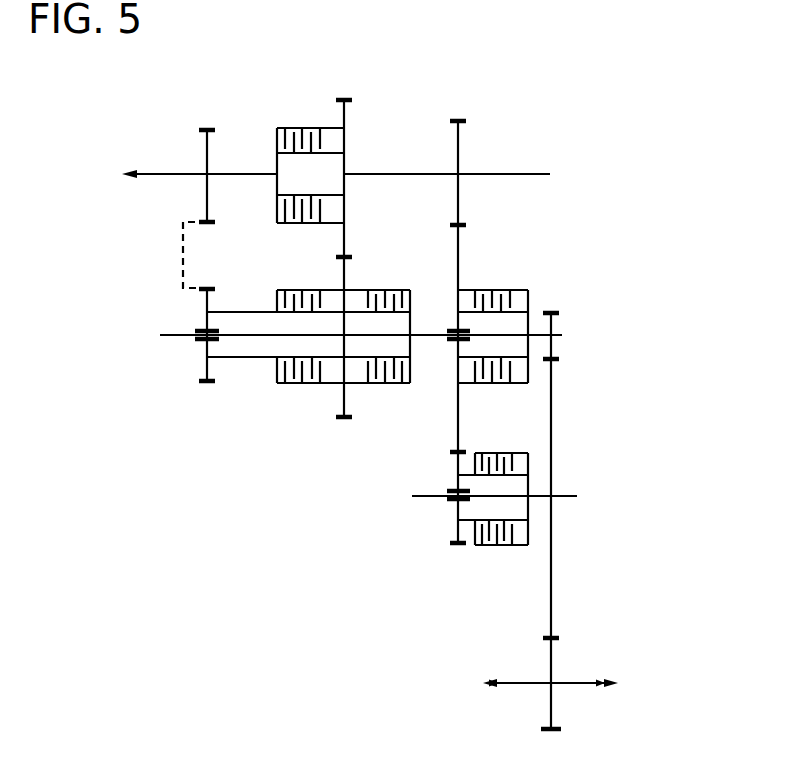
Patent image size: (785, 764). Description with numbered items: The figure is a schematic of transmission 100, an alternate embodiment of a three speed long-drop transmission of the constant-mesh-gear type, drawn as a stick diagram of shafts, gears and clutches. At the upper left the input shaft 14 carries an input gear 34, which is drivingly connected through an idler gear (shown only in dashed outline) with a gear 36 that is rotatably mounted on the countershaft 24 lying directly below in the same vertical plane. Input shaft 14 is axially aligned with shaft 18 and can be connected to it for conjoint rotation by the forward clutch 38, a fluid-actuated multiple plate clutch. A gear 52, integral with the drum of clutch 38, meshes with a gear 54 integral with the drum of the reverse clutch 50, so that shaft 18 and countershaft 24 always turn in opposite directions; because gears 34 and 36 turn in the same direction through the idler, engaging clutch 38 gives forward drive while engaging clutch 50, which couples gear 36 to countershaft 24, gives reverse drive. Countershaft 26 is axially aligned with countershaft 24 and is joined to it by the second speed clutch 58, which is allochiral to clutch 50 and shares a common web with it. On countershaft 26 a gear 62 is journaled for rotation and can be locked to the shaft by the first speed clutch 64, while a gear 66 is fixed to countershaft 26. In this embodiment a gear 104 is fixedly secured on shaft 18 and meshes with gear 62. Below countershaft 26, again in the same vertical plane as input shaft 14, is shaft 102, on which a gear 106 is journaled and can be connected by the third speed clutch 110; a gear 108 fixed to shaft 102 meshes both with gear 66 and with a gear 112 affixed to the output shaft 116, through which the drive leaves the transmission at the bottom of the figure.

The input shaft 14 is at (232, 177).
The shaft 18 is at (402, 172).
The countershaft 24 is at (242, 338).
The countershaft 26 is at (432, 339).
The input gear 34 is at (206, 132).
The gear 36 is at (206, 305).
The clutch 38 is at (297, 126).
The clutch 50 is at (303, 286).
The gear 52 is at (346, 110).
The gear 54 is at (347, 262).
The clutch 58 is at (381, 286).
The gear 62 is at (461, 249).
The clutch 64 is at (501, 288).
The gear 66 is at (555, 325).
The transmission 100 is at (290, 478).
The shaft 102 is at (562, 498).
The gear 104 is at (461, 138).
The gear 106 is at (455, 461).
The gear 108 is at (556, 405).
The clutch 110 is at (494, 450).
The gear 112 is at (556, 652).
The output shaft 116 is at (581, 685).